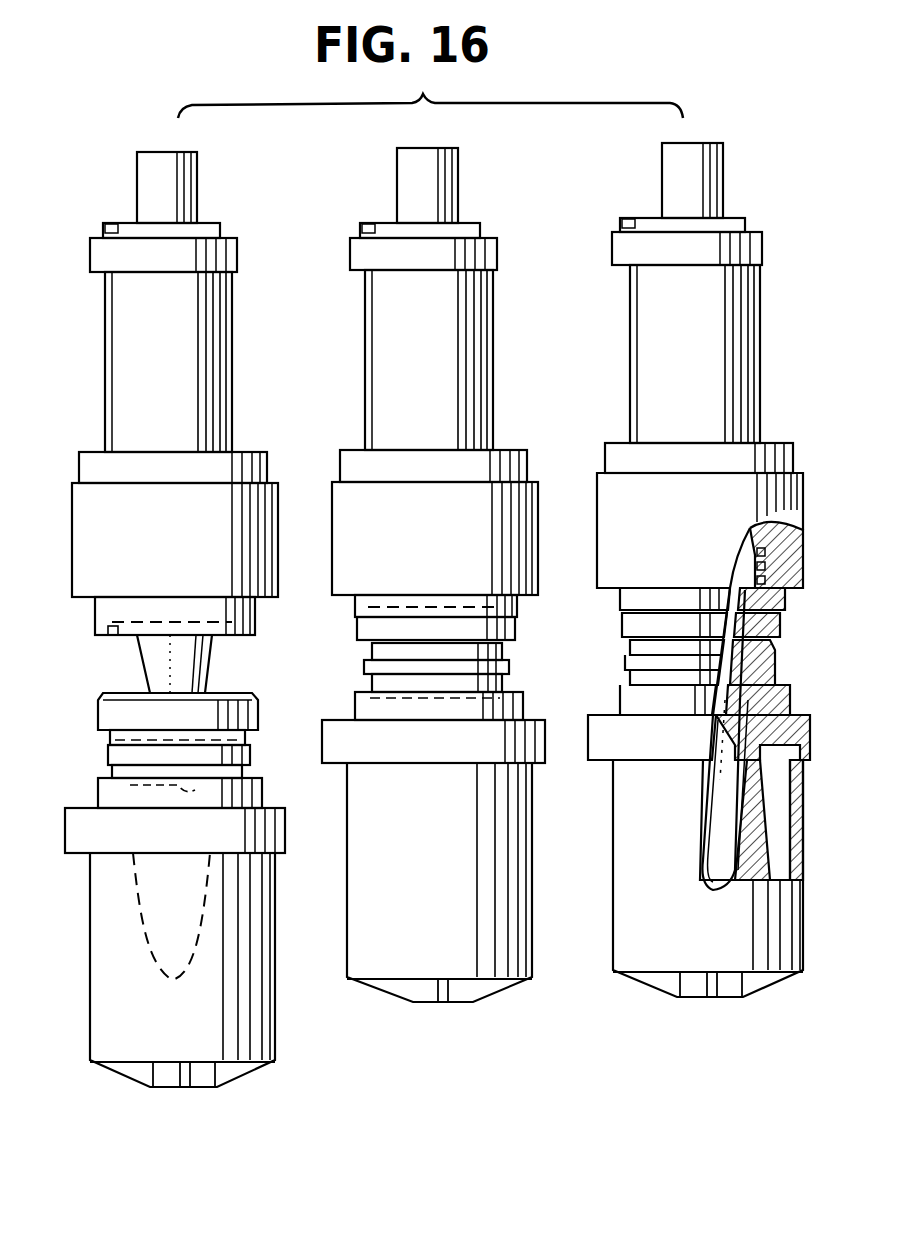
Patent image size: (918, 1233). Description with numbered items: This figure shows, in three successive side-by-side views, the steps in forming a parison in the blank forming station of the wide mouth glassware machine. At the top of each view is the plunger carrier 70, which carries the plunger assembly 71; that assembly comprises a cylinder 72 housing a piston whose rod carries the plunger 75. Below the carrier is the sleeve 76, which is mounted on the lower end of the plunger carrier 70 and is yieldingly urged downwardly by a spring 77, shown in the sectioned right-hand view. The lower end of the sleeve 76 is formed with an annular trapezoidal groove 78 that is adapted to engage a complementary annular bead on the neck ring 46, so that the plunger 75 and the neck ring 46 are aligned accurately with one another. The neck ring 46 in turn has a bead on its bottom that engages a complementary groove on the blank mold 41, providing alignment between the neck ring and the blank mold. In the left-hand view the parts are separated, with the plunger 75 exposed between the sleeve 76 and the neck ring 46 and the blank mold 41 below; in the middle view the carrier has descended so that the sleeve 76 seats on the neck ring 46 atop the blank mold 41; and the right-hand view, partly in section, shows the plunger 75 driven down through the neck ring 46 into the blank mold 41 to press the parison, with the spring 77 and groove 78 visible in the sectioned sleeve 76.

The plunger carrier 70 is at (224, 213).
The plunger assembly 71 is at (241, 371).
The cylinder 72 is at (238, 403).
The plunger 75 is at (210, 667).
The sleeve 76 is at (252, 620).
The spring 77 is at (797, 570).
The annular trapezoidal groove 78 is at (112, 648).
The neck ring 46 is at (110, 714).
The blank mold 41 is at (258, 952).